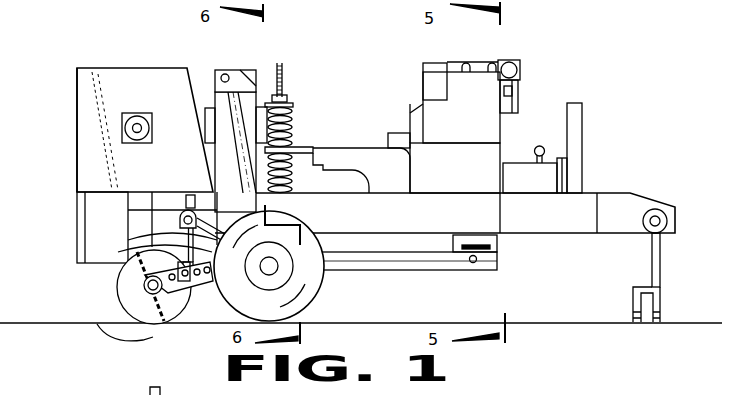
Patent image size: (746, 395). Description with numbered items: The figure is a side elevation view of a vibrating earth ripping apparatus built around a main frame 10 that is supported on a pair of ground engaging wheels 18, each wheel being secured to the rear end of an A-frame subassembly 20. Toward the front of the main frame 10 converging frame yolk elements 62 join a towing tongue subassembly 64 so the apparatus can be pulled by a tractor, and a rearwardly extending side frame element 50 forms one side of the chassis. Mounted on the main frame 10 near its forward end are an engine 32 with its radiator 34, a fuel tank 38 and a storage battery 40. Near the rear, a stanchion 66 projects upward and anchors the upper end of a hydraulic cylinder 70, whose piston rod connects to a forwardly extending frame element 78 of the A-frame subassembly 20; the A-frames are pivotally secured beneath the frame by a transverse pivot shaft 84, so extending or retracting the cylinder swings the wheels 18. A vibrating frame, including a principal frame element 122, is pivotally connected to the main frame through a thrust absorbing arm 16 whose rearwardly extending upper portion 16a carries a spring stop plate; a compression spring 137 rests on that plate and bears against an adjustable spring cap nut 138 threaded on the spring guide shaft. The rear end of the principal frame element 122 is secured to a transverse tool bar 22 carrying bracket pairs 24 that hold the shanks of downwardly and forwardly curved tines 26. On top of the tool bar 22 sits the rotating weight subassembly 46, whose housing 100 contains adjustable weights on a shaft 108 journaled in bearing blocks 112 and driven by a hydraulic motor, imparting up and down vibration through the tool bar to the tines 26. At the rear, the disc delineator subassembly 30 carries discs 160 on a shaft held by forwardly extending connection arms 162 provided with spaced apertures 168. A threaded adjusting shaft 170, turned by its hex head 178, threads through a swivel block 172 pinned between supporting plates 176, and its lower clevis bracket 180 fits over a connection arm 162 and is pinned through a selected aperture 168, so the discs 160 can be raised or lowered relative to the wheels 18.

The main frame 10 is at (535, 245).
The thrust absorbing arm 16 is at (350, 140).
The upper portion of thrust absorbing arm 16a is at (316, 168).
The ground engaging wheel 18 is at (235, 296).
The A-frame subassembly 20 is at (370, 278).
The tool bar 22 is at (136, 192).
The bracket 24 is at (113, 218).
The tine 26 is at (117, 333).
The disc delineator subassembly 30 is at (110, 306).
The engine 32 is at (476, 119).
The radiator 34 is at (582, 108).
The fuel tank 38 is at (465, 169).
The storage battery 40 is at (552, 189).
The rotating weight subassembly 46 is at (88, 100).
The side frame element 50 is at (408, 217).
The frame yolk element 62 is at (566, 219).
The towing tongue subassembly 64 is at (661, 257).
The stanchion 66 is at (262, 85).
The hydraulic cylinder 70 is at (228, 93).
The forwardly extending frame element 78 is at (423, 263).
The pivot shaft 84 is at (473, 264).
The housing 100 is at (160, 101).
The shaft 108 is at (125, 128).
The bearing block 112 is at (125, 143).
The principal frame element 122 is at (167, 205).
The compression spring 137 is at (283, 128).
The spring cap nut 138 is at (290, 110).
The disc 160 is at (122, 392).
The connection arm 162 is at (142, 268).
The aperture 168 is at (172, 334).
The threaded adjusting shaft 170 is at (131, 247).
The swivel block 172 is at (133, 234).
The supporting plate 176 is at (223, 293).
The hex head 178 is at (190, 195).
The clevis bracket 180 is at (170, 316).